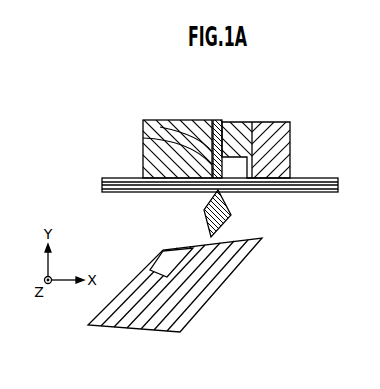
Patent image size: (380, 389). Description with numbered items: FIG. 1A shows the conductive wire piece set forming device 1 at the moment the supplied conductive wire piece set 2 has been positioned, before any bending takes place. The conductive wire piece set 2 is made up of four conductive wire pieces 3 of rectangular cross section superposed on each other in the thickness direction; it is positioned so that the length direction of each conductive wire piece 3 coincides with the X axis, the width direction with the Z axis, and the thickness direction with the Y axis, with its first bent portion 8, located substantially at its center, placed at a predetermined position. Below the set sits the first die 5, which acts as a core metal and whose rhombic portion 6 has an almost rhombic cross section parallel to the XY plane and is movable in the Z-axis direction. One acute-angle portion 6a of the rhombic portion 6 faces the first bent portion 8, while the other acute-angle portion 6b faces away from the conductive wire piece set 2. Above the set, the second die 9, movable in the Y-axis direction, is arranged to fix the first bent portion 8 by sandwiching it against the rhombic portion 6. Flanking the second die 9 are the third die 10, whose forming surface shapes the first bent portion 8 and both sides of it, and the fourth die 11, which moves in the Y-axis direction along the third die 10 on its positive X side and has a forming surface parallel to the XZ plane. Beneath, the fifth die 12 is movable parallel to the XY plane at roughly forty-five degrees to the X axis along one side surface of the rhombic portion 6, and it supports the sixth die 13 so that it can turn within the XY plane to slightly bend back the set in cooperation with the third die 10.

The conductive wire piece set forming device 1 is at (304, 91).
The conductive wire piece set 2 is at (287, 230).
The conductive wire piece 3 is at (290, 192).
The first die 5 is at (198, 203).
The rhombic portion 6 is at (205, 216).
The acute-angle portion 6a is at (227, 193).
The acute-angle portion 6b is at (211, 237).
The first bent portion 8 is at (148, 176).
The second die 9 is at (218, 120).
The third die 10 is at (148, 135).
The fourth die 11 is at (292, 135).
The fifth die 12 is at (215, 287).
The sixth die 13 is at (160, 263).